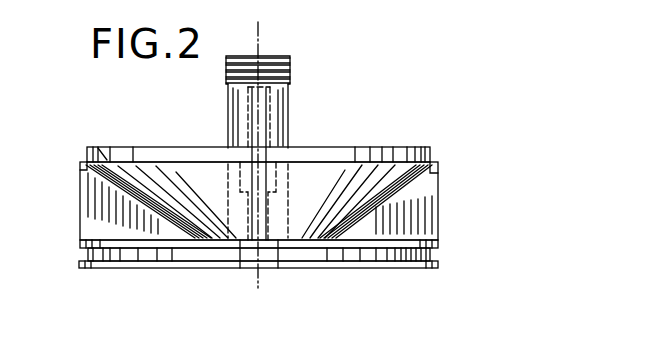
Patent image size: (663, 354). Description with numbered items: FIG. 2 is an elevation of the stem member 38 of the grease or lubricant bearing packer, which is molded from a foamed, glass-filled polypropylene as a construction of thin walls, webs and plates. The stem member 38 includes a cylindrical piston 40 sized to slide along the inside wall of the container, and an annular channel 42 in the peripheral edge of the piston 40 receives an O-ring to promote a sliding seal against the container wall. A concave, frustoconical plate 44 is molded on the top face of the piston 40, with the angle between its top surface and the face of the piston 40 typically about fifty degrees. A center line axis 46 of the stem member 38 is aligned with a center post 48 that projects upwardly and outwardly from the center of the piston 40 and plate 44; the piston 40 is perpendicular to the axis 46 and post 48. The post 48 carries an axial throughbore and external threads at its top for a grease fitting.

The stem member 38 is at (132, 270).
The cylindrical piston 40 is at (385, 263).
The annular channel 42 is at (430, 253).
The frustoconical plate 44 is at (259, 166).
The center line axis 46 is at (261, 31).
The center post 48 is at (290, 93).